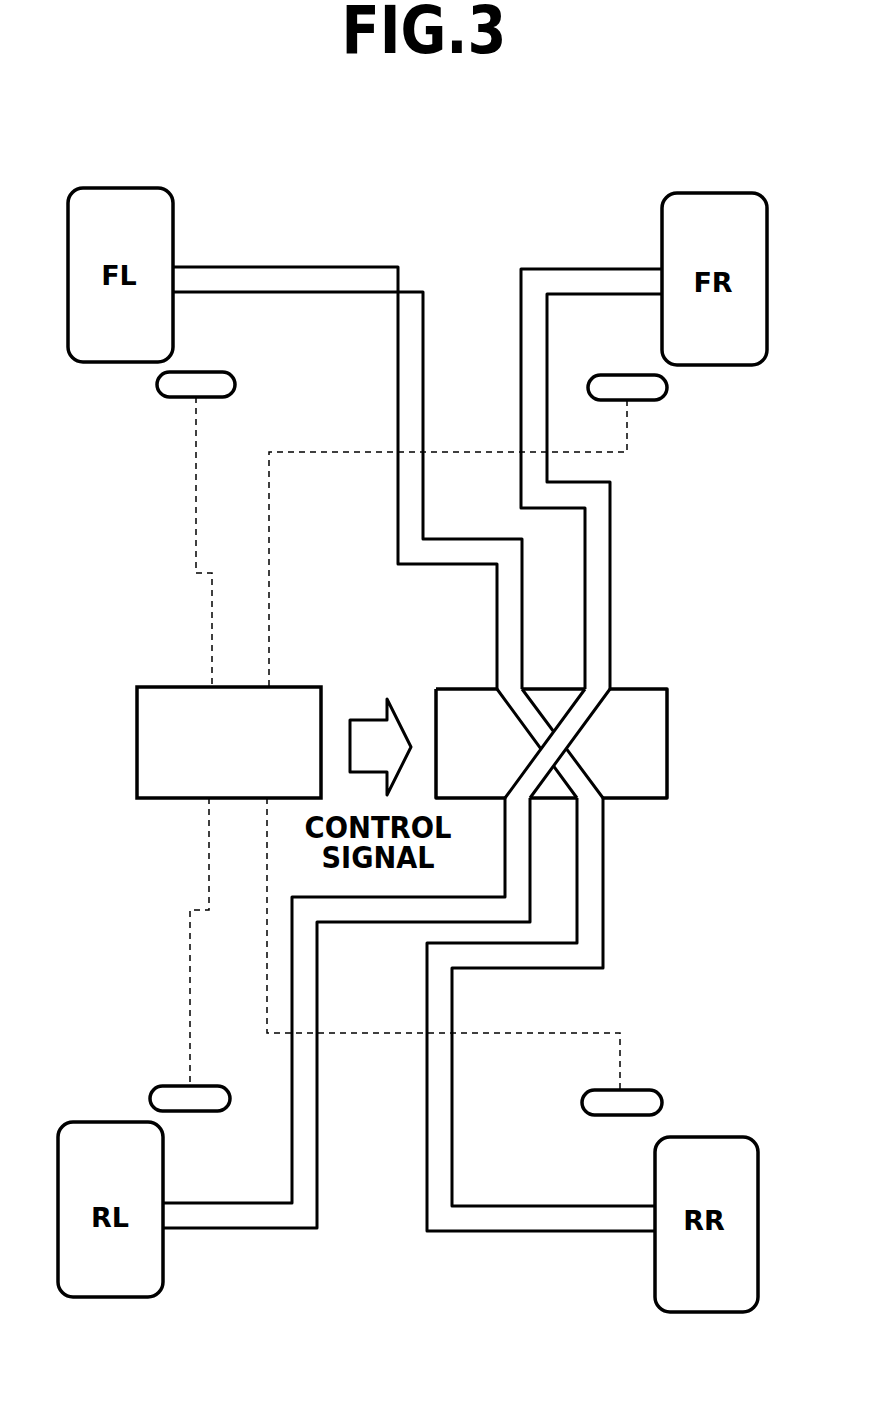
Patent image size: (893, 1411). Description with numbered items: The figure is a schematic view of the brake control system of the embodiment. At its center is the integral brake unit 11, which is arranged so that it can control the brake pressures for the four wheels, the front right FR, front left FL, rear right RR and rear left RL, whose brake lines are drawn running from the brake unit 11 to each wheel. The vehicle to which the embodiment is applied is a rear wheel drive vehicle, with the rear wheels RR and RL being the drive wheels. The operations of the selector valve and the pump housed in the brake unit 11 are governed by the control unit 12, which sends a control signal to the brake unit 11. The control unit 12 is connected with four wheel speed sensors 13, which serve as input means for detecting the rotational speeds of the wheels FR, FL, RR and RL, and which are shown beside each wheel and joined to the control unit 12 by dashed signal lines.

The brake unit 11 is at (652, 689).
The control unit 12 is at (180, 687).
The wheel speed sensor 13 is at (225, 372).